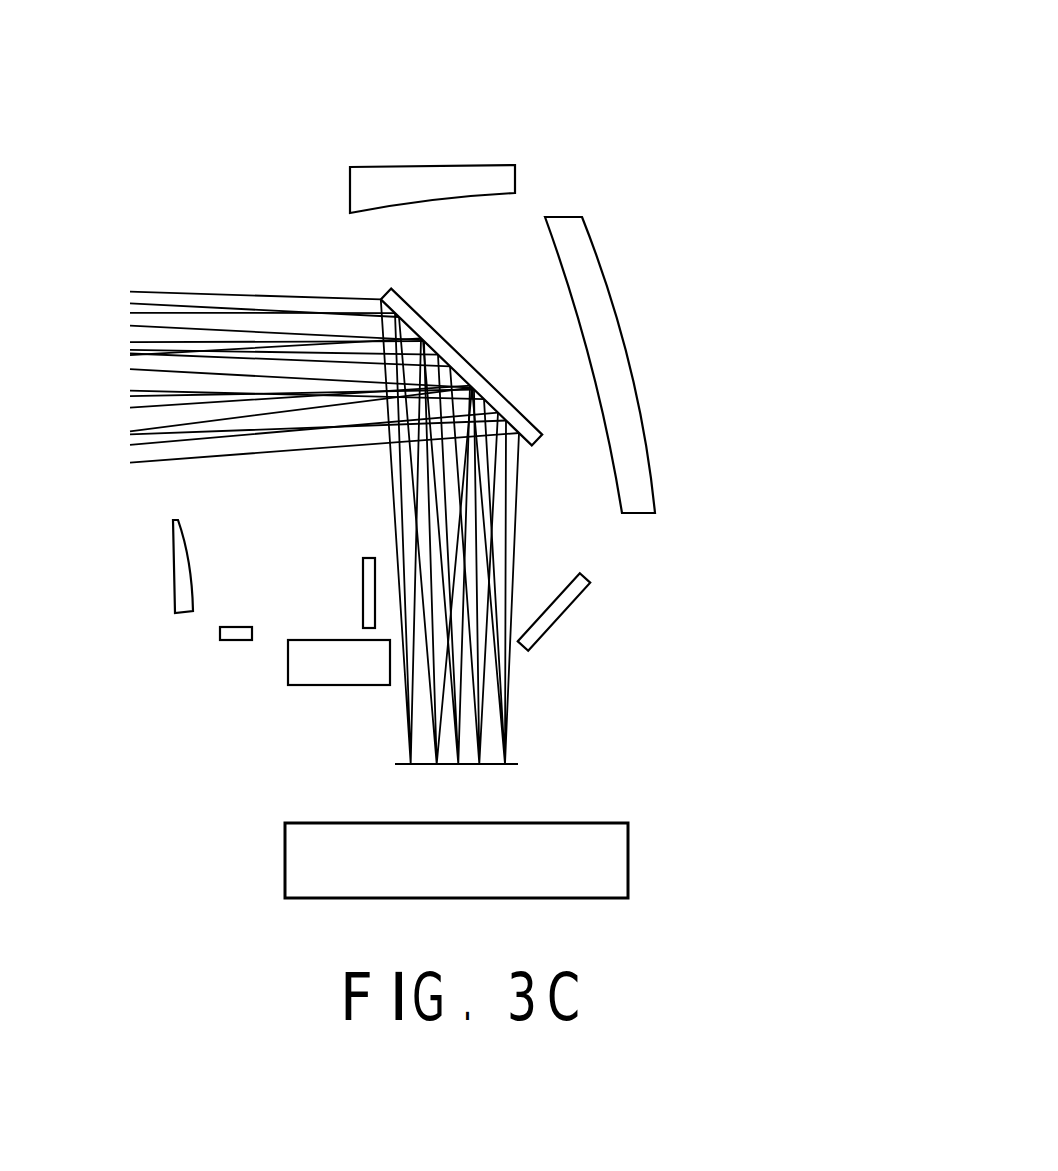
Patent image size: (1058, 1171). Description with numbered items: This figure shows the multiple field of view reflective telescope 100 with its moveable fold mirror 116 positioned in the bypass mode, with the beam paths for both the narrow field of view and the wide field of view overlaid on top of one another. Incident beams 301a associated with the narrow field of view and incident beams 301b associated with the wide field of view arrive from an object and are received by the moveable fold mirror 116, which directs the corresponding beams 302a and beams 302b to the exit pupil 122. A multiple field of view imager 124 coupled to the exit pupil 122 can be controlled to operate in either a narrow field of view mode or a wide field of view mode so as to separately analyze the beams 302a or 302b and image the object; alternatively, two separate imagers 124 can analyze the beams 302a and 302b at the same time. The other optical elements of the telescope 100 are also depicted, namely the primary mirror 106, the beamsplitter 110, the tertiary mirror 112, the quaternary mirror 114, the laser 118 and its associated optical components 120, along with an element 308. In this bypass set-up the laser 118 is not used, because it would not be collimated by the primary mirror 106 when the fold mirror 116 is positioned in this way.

The multiple field of view reflective telescope 100 is at (812, 48).
The primary mirror 106 is at (634, 367).
The beamsplitter 110 is at (363, 575).
The tertiary mirror 112 is at (567, 603).
The quaternary mirror 114 is at (433, 165).
The moveable fold mirror 116 is at (440, 332).
The laser 118 is at (302, 687).
The optical components 120 is at (237, 642).
The exit pupil 122 is at (513, 763).
The multiple field of view imager 124 is at (630, 858).
The incident beams 301a is at (276, 376).
The incident beams 301b is at (120, 325).
The beams 302a is at (542, 703).
The beams 302b is at (437, 737).
The wedge element 308 is at (170, 577).